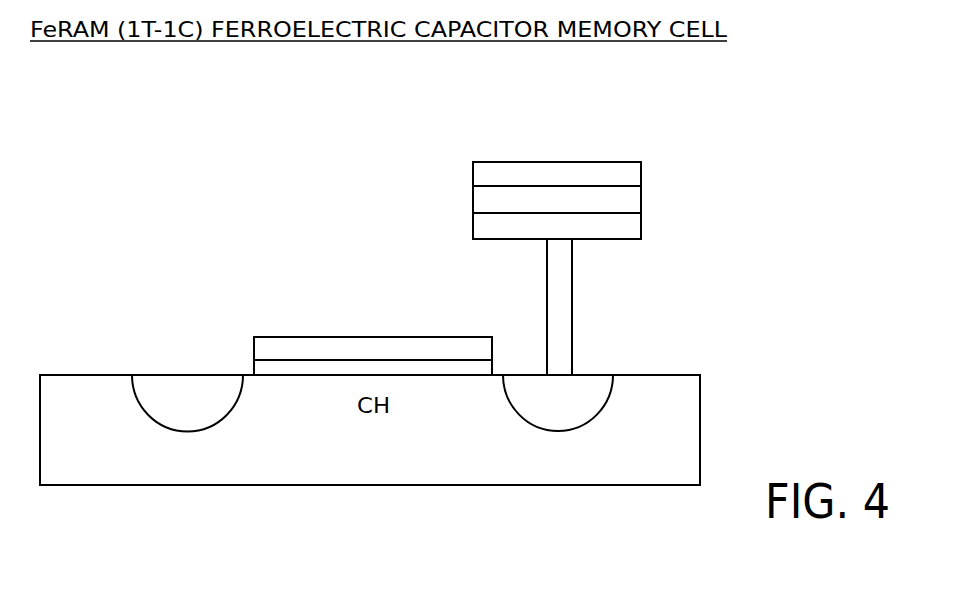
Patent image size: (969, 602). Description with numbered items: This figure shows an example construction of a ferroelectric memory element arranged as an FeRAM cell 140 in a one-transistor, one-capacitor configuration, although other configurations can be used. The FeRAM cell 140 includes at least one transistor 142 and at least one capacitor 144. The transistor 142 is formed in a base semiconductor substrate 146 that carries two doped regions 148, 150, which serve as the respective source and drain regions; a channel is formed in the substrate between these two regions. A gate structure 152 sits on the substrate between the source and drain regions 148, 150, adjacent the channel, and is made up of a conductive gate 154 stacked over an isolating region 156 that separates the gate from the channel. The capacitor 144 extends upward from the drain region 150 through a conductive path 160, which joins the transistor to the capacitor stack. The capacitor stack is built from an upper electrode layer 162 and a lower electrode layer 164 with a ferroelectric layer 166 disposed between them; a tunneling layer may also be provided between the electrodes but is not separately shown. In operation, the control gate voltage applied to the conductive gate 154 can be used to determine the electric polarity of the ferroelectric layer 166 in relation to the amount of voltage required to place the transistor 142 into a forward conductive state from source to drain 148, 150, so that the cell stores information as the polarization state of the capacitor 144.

The FeRAM cell 140 is at (157, 197).
The transistor 142 is at (250, 320).
The capacitor 144 is at (640, 148).
The base semiconductor substrate 146 is at (352, 461).
The doped region 148 is at (176, 387).
The doped region 150 is at (592, 387).
The gate structure 152 is at (298, 335).
The conductive gate 154 is at (445, 343).
The isolating region 156 is at (377, 372).
The conductive path 160 is at (557, 290).
The upper electrode layer 162 is at (641, 175).
The lower electrode layer 164 is at (641, 232).
The ferroelectric layer 166 is at (485, 199).